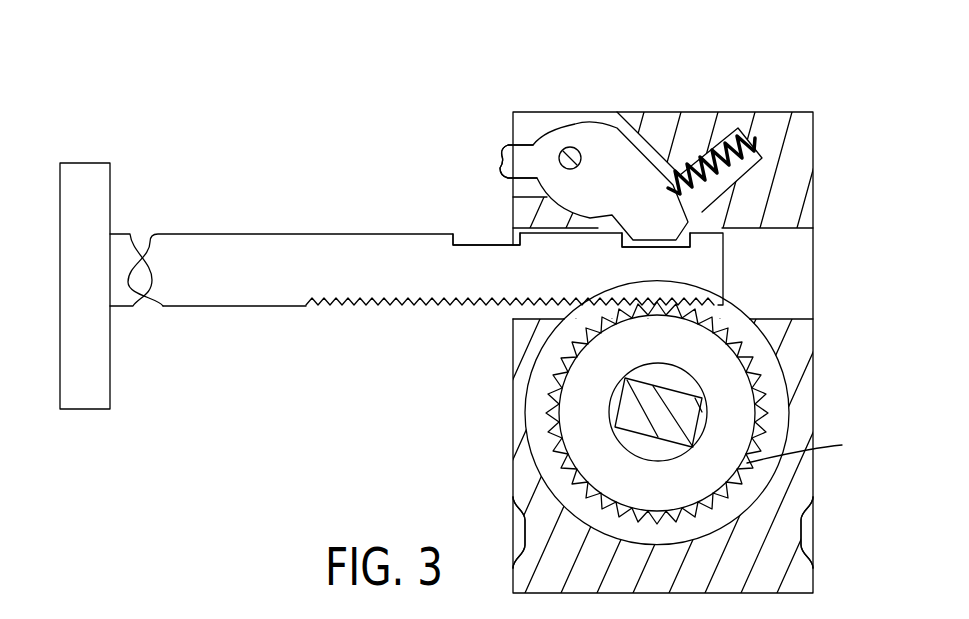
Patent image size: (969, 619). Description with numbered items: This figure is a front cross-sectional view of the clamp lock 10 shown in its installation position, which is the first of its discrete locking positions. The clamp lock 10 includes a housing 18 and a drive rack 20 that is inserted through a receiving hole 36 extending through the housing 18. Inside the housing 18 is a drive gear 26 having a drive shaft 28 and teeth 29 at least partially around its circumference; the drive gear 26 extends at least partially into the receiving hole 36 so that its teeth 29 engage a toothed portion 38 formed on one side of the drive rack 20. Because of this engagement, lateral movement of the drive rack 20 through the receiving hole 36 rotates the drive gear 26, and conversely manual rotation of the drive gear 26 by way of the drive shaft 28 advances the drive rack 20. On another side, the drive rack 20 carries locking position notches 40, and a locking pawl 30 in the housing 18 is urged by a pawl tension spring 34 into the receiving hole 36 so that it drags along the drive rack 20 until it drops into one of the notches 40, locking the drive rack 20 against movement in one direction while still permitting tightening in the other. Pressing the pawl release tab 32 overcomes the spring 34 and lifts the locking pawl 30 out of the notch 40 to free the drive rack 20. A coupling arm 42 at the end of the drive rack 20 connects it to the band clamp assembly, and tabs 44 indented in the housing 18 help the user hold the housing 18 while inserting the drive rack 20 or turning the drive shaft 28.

The clamp lock 10 is at (351, 66).
The housing 18 is at (798, 122).
The drive rack 20 is at (232, 236).
The drive gear 26 is at (740, 416).
The drive shaft 28 is at (630, 443).
The teeth 29 is at (809, 447).
The locking pawl 30 is at (583, 133).
The pawl release tab 32 is at (504, 157).
The pawl tension spring 34 is at (755, 130).
The receiving hole 36 is at (783, 266).
The toothed portion 38 is at (336, 300).
The locking position notches 40 is at (458, 232).
The coupling arm 42 is at (88, 173).
The tabs 44 is at (525, 535).